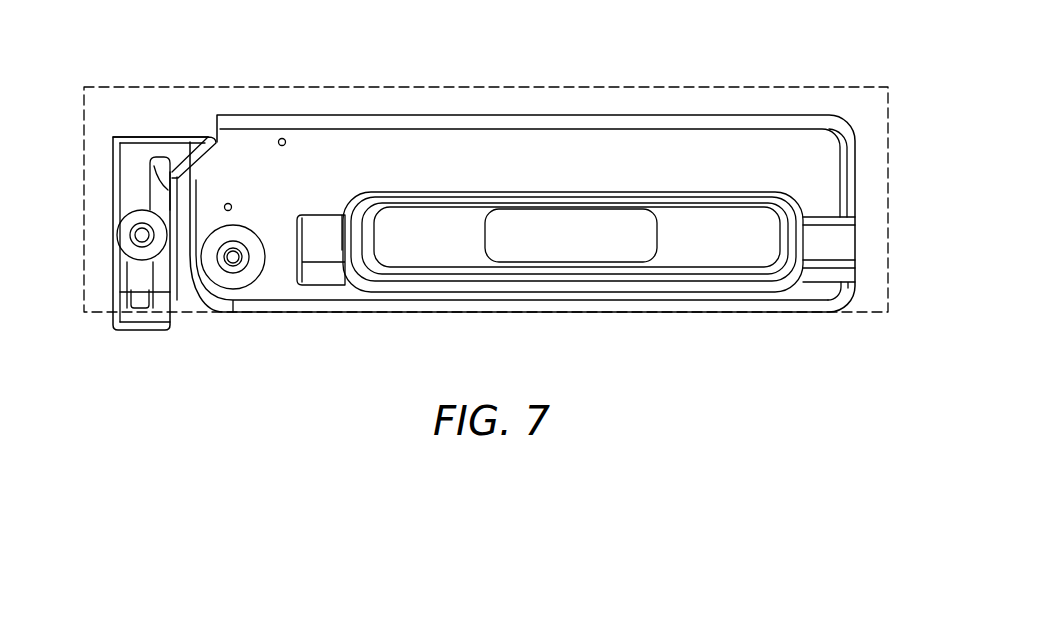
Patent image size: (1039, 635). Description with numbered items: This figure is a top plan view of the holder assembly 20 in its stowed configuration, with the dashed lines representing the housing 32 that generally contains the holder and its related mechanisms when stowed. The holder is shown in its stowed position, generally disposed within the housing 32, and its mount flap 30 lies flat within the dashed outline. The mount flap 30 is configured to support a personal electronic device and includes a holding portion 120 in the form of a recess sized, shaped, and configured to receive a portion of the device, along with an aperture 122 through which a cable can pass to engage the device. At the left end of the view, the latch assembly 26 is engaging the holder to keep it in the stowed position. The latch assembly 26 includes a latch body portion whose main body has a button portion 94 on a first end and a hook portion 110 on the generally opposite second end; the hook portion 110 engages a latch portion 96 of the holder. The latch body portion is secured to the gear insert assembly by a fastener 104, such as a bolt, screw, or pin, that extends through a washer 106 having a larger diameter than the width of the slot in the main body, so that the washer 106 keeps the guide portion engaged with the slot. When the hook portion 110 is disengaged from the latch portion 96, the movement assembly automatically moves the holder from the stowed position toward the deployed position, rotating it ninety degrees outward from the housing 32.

The holder assembly 20 is at (281, 348).
The latch assembly 26 is at (90, 183).
The mount flap 30 is at (765, 241).
The housing 32 is at (752, 88).
The button portion 94 is at (140, 332).
The latch portion 96 is at (208, 171).
The fastener 104 is at (133, 229).
The washer 106 is at (125, 243).
The hook portion 110 is at (189, 136).
The holding portion 120 is at (737, 228).
The aperture 122 is at (553, 207).